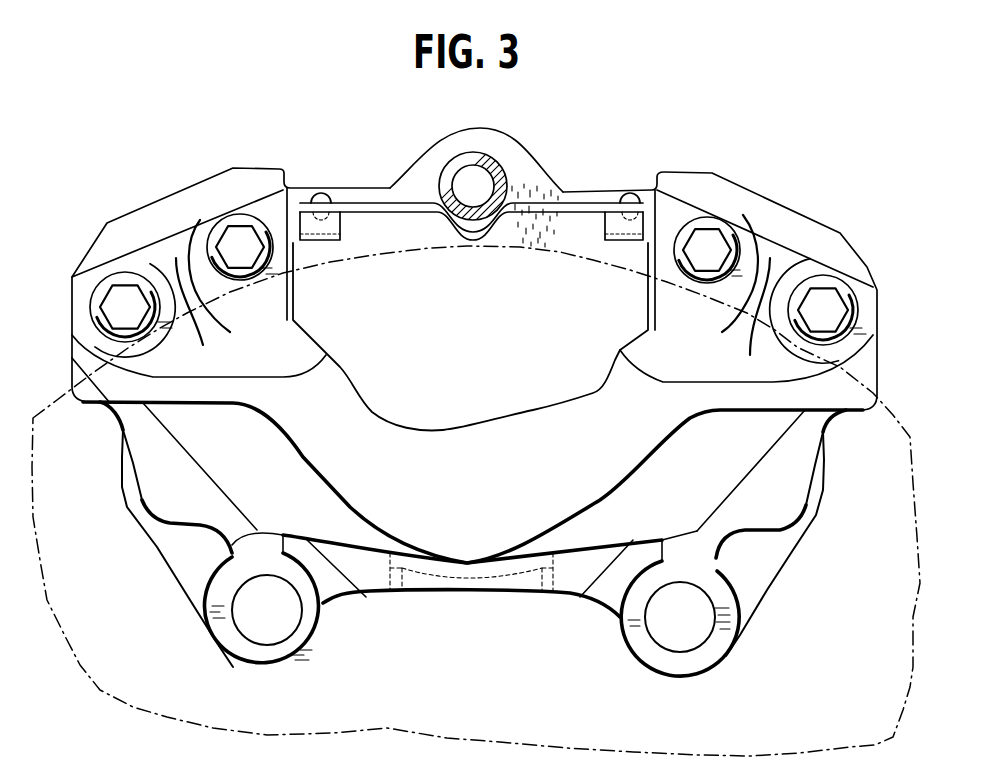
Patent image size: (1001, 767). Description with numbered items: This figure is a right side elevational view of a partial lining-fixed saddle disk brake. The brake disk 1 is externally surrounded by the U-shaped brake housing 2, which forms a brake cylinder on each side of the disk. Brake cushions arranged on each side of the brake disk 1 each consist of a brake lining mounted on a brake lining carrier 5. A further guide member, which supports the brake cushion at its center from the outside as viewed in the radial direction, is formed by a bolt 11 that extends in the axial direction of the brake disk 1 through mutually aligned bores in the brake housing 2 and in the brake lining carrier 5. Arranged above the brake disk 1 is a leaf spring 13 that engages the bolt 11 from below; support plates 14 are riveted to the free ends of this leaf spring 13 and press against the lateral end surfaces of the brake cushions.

The brake disk 1 is at (158, 685).
The brake housing 2 is at (150, 493).
The brake lining carrier 5 is at (490, 393).
The bolt 11 is at (498, 172).
The leaf spring 13 is at (457, 223).
The support plates 14 is at (605, 230).